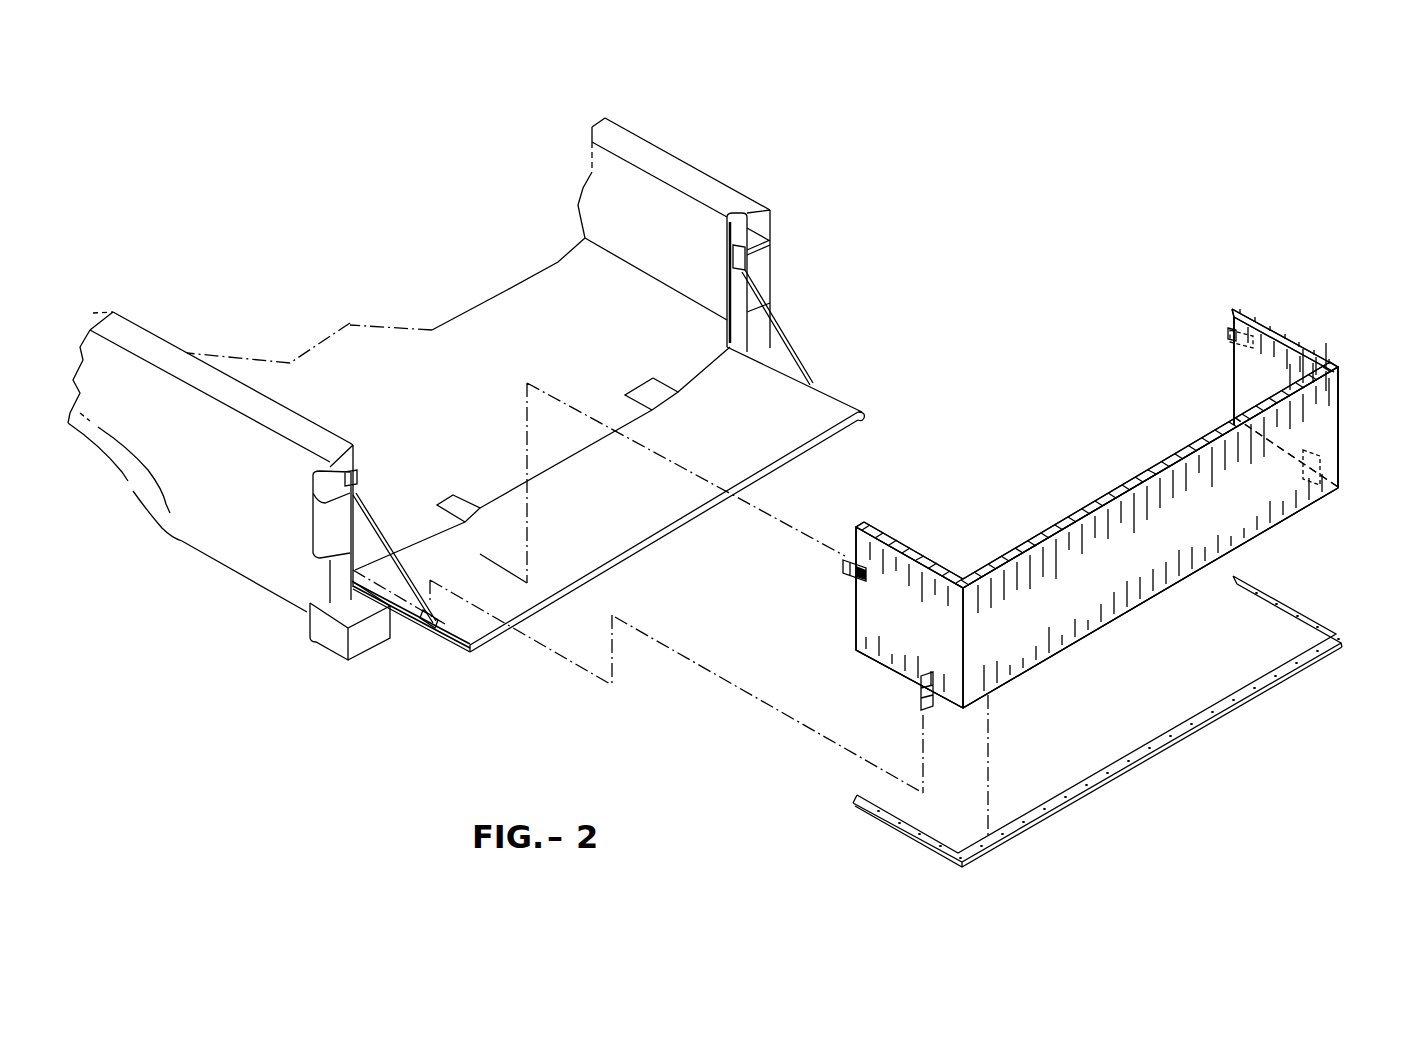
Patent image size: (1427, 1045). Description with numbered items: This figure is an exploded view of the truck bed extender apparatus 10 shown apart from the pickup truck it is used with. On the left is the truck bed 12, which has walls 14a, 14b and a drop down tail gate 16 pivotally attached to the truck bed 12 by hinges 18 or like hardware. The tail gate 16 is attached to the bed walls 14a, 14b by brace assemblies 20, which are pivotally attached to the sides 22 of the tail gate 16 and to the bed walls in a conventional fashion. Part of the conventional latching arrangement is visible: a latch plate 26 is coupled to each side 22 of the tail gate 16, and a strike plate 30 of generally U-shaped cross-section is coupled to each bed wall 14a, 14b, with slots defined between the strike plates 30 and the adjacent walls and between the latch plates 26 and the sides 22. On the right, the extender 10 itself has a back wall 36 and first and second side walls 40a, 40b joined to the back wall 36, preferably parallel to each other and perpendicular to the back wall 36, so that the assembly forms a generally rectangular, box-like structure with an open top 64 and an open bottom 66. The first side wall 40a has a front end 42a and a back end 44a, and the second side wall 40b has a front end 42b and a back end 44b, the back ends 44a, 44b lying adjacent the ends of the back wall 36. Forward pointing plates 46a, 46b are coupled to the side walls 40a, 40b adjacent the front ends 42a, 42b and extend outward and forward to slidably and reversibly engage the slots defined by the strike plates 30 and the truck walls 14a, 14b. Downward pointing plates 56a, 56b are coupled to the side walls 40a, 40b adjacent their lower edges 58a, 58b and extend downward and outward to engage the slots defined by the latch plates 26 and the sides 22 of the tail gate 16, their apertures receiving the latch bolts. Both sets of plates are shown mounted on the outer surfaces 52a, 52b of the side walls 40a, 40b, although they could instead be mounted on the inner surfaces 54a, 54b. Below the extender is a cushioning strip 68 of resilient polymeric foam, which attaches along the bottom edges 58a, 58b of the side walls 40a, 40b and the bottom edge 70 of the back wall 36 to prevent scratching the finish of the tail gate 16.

The truck bed extender apparatus 10 is at (1251, 853).
The truck bed 12 is at (513, 313).
The truck bed wall 14a is at (272, 413).
The truck bed wall 14b is at (683, 168).
The tail gate 16 is at (638, 553).
The hinges 18 is at (460, 493).
The brace assemblies 20 is at (768, 335).
The sides of tail gate 22 is at (457, 657).
The latch plate 26 is at (435, 630).
The strike plate 30 is at (733, 258).
The back wall 36 is at (1263, 522).
The first side wall 40a is at (893, 542).
The second side wall 40b is at (1297, 340).
The front end of first side wall 42a is at (838, 610).
The front end of second side wall 42b is at (1207, 338).
The back end of first side wall 44a is at (978, 645).
The back end of second side wall 44b is at (1362, 399).
The first forward pointing plate 46a is at (842, 568).
The second forward pointing plate 46b is at (1230, 338).
The outer surface of first side wall 52a is at (942, 648).
The outer surface of second side wall 52b is at (1280, 318).
The inner surface of first side wall 54a is at (956, 552).
The inner surface of second side wall 54b is at (1266, 374).
The first downward pointing plate 56a is at (923, 698).
The second downward pointing plate 56b is at (1323, 493).
The lower edge of first side wall 58a is at (873, 658).
The lower edge of second side wall 58b is at (1267, 448).
The open top 64 is at (1045, 480).
The open bottom 66 is at (1104, 585).
The cushioning strip 68 is at (1240, 693).
The bottom edge of back wall 70 is at (1032, 680).